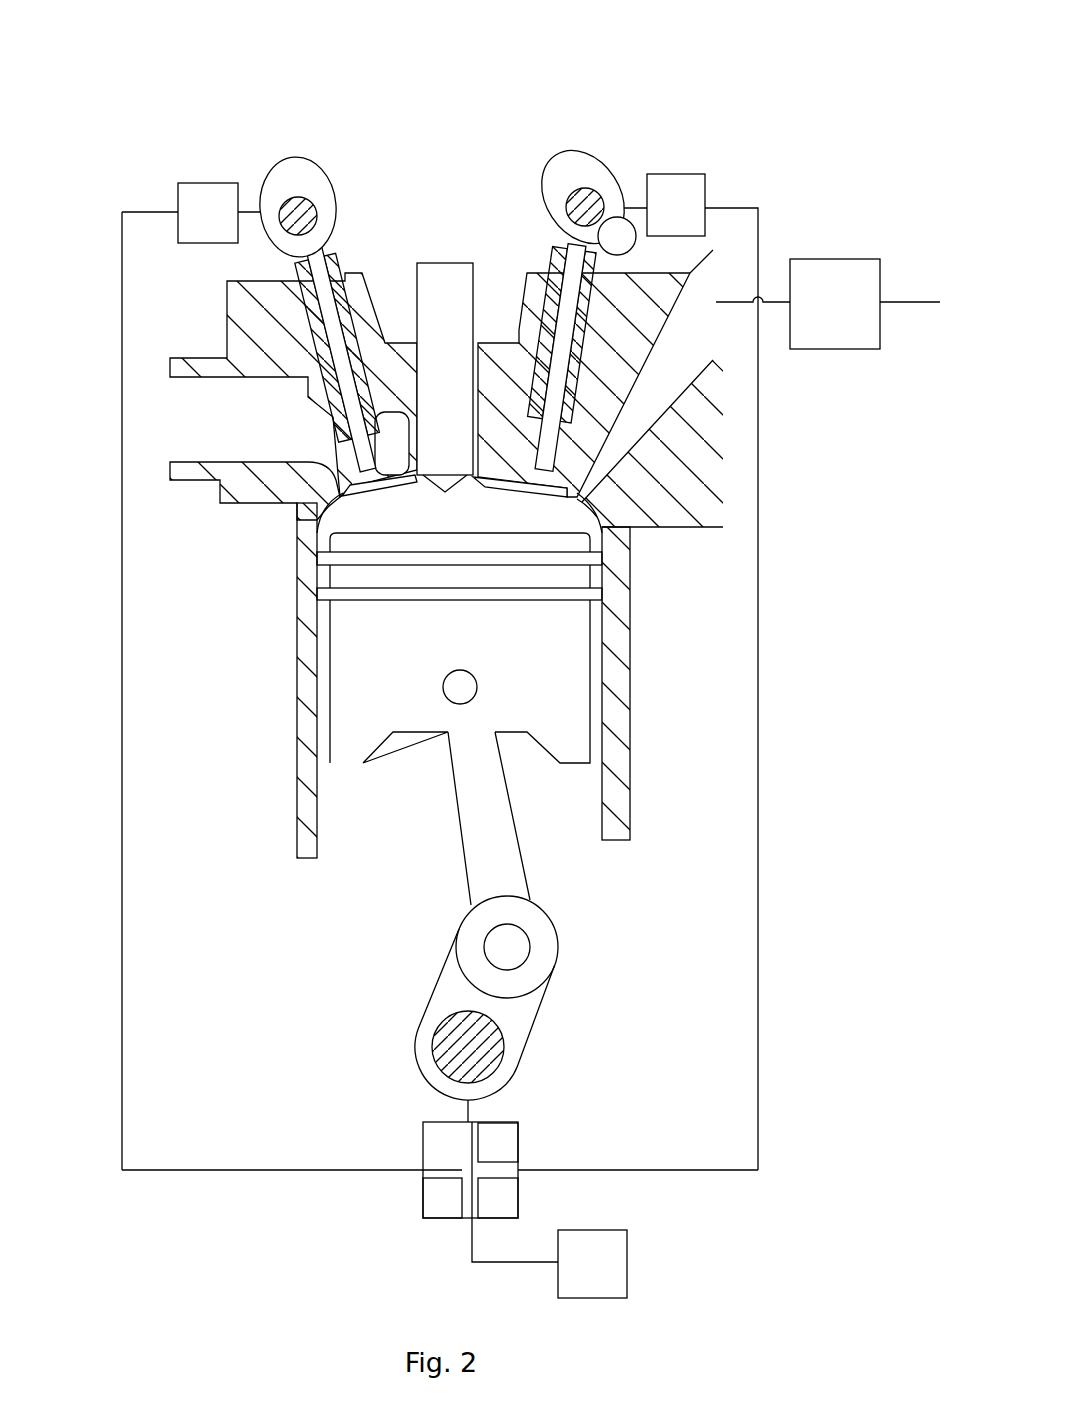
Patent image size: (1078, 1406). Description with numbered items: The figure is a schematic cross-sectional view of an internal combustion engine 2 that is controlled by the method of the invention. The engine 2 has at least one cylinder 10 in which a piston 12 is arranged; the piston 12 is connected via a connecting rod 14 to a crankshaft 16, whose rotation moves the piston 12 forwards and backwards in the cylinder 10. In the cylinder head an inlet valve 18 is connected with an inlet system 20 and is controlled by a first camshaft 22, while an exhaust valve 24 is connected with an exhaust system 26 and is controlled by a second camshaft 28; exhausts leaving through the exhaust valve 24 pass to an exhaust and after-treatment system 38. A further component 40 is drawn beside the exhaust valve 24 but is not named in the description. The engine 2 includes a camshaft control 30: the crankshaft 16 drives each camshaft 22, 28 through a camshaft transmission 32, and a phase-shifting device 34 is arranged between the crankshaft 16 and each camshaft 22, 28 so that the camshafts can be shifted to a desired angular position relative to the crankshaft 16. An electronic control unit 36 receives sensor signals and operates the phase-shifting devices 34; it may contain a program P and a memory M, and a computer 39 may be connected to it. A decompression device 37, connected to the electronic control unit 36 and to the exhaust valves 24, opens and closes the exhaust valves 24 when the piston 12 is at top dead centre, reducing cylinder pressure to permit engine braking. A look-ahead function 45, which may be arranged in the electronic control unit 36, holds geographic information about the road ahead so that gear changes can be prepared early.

The internal combustion engine 2 is at (611, 78).
The cylinder 10 is at (603, 808).
The piston 12 is at (588, 658).
The connecting rod 14 is at (528, 872).
The crankshaft 16 is at (533, 1028).
The inlet valve 18 is at (372, 450).
The inlet system 20 is at (192, 427).
The first camshaft 22 is at (280, 160).
The exhaust valve 24 is at (515, 400).
The exhaust system 26 is at (835, 220).
The second camshaft 28 is at (592, 160).
The camshaft control 30 is at (310, 1192).
The camshaft transmission 32 is at (758, 635).
The phase-shifting device 34 is at (178, 197).
The electronic control unit 36 is at (423, 1152).
The decompression device 37 is at (628, 252).
The exhaust and after-treatment system 38 is at (835, 349).
The computer 39 is at (627, 1257).
The exhaust port 40 is at (633, 412).
The look-ahead function 45 is at (435, 1197).